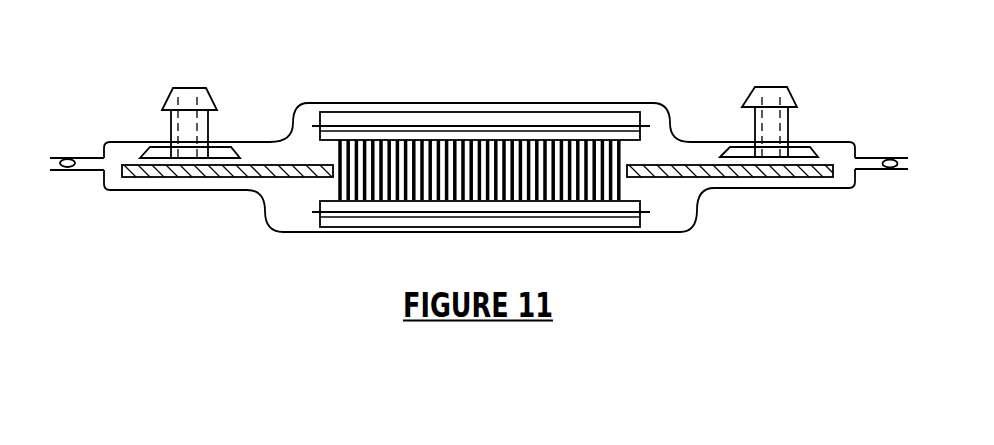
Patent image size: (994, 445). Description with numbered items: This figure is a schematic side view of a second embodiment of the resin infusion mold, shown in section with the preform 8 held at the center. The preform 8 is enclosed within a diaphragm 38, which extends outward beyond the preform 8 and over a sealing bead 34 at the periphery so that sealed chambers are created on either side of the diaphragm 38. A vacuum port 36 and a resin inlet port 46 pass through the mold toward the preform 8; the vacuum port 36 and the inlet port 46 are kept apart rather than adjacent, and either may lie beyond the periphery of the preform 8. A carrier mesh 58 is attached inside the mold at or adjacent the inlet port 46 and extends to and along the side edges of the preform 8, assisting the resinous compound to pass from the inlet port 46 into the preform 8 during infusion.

The preform 8 is at (605, 205).
The sealing bead 34 is at (67, 155).
The vacuum port 36 is at (760, 87).
The diaphragm 38 is at (465, 100).
The resin inlet port 46 is at (198, 88).
The carrier mesh 58 is at (245, 172).